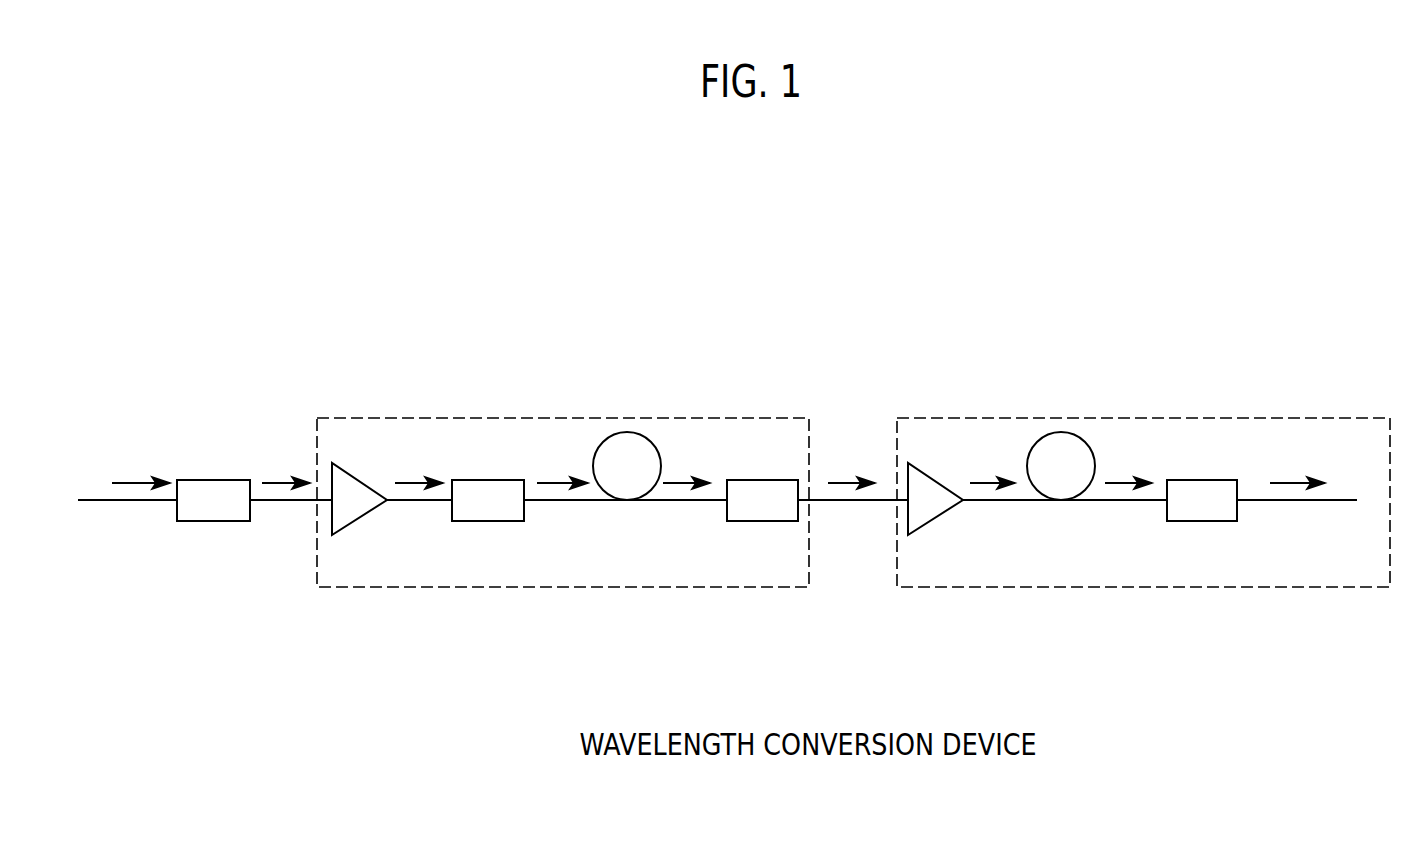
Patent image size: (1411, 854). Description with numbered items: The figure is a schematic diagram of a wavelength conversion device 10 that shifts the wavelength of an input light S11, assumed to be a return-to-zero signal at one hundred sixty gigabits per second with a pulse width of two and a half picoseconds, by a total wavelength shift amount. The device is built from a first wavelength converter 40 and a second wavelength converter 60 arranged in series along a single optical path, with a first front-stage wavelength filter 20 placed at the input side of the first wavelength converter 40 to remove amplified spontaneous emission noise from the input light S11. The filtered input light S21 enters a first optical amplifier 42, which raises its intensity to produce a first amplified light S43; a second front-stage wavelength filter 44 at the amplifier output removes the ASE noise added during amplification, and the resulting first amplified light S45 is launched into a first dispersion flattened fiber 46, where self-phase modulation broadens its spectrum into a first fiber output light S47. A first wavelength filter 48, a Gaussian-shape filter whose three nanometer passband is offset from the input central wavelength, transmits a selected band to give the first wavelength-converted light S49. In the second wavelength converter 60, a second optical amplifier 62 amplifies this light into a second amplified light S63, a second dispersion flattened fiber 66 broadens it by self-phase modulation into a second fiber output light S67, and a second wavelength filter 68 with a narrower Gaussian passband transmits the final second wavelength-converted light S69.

The wavelength conversion device 10 is at (1197, 273).
The first front-stage wavelength filter 20 is at (210, 478).
The first wavelength converter 40 is at (758, 418).
The first optical amplifier 42 is at (350, 524).
The second front-stage wavelength filter 44 is at (490, 522).
The first dispersion flattened fiber 46 is at (623, 432).
The first wavelength filter 48 is at (762, 522).
The second wavelength converter 60 is at (1210, 418).
The second optical amplifier 62 is at (930, 524).
The second dispersion flattened fiber 66 is at (1060, 432).
The second wavelength filter 68 is at (1210, 522).
The input light S11 is at (126, 478).
The input light to first wavelength converter S21 is at (277, 478).
The first amplified light S43 is at (410, 478).
The first amplified light transmitted via second front-stage filter S45 is at (547, 478).
The first fiber output light S47 is at (679, 478).
The first wavelength-converted light S49 is at (842, 478).
The second amplified light S63 is at (982, 478).
The second fiber output light S67 is at (1118, 478).
The second wavelength-converted light S69 is at (1288, 478).